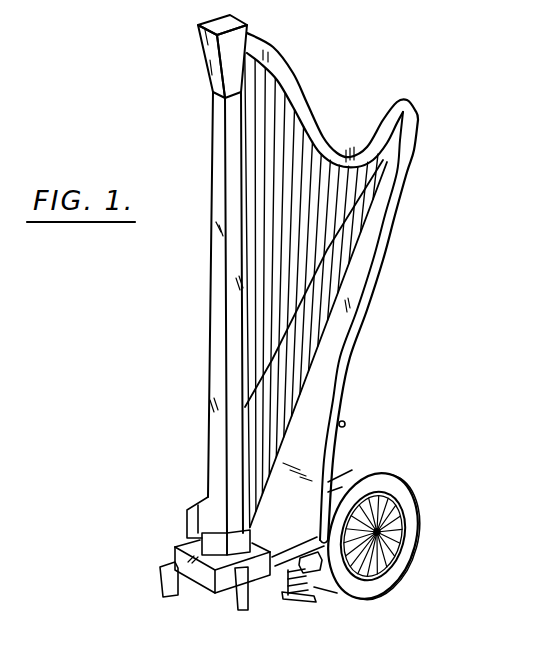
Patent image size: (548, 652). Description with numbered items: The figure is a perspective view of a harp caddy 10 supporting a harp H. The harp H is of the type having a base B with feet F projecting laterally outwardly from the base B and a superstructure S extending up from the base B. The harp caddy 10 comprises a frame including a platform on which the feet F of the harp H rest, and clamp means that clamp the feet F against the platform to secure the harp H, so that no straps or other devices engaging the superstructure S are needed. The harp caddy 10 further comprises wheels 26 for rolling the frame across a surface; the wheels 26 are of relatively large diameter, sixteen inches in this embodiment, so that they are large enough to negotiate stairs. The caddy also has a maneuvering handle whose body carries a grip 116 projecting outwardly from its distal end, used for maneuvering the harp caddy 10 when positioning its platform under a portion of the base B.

The harp caddy 10 is at (410, 458).
The superstructure S is at (210, 309).
The harp H is at (380, 273).
The base B is at (243, 565).
The feet F is at (317, 598).
The wheels 26 is at (413, 548).
The grip 116 is at (345, 424).